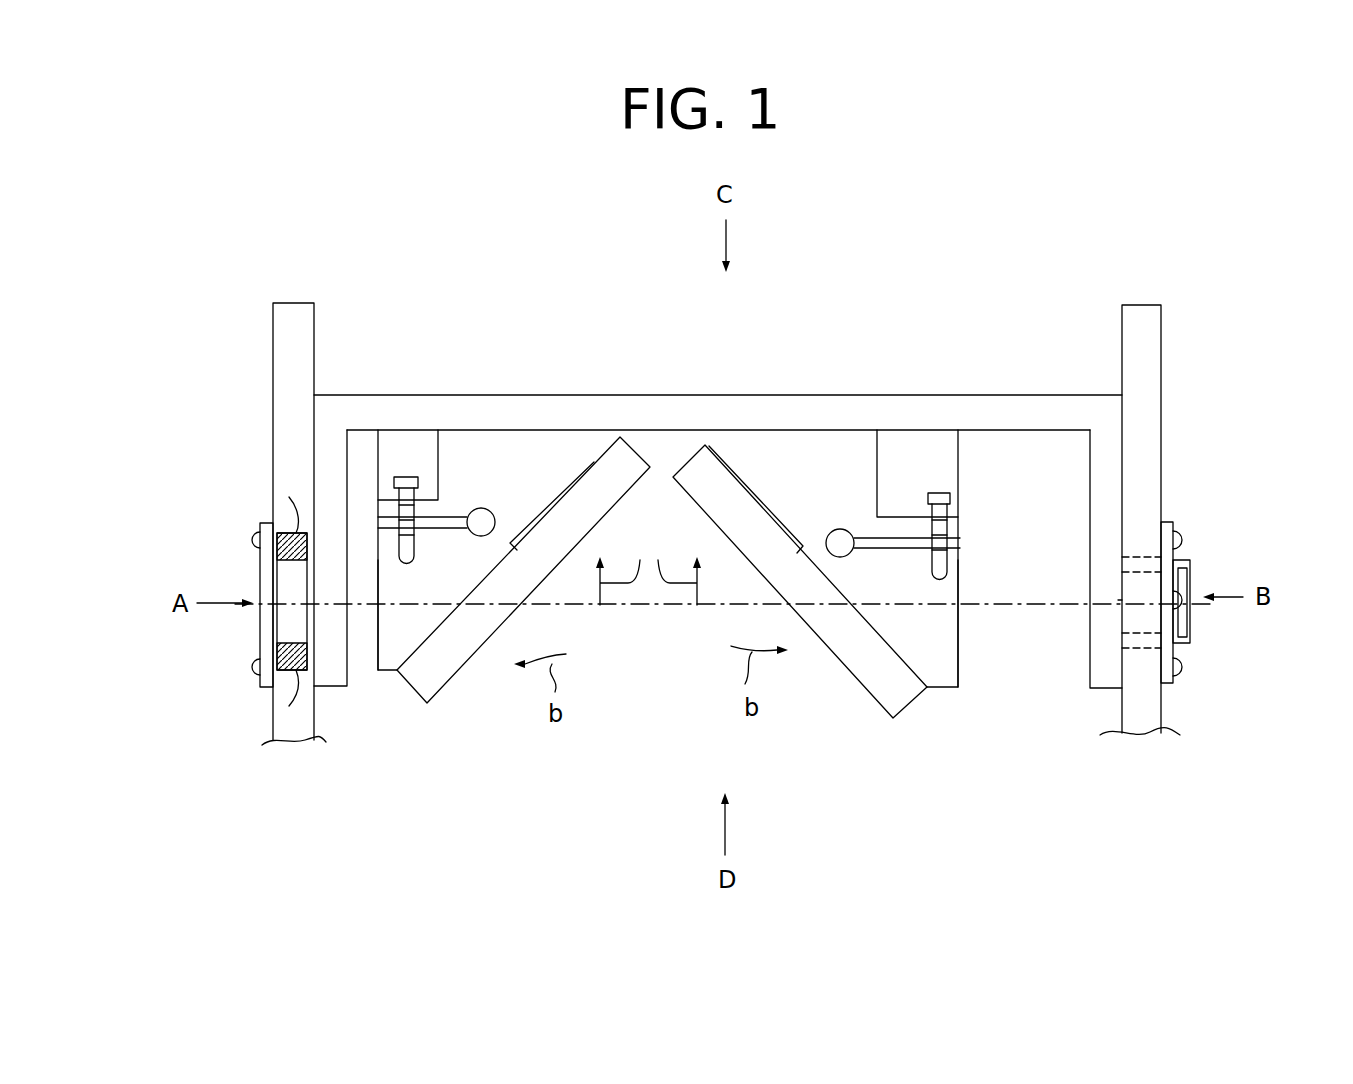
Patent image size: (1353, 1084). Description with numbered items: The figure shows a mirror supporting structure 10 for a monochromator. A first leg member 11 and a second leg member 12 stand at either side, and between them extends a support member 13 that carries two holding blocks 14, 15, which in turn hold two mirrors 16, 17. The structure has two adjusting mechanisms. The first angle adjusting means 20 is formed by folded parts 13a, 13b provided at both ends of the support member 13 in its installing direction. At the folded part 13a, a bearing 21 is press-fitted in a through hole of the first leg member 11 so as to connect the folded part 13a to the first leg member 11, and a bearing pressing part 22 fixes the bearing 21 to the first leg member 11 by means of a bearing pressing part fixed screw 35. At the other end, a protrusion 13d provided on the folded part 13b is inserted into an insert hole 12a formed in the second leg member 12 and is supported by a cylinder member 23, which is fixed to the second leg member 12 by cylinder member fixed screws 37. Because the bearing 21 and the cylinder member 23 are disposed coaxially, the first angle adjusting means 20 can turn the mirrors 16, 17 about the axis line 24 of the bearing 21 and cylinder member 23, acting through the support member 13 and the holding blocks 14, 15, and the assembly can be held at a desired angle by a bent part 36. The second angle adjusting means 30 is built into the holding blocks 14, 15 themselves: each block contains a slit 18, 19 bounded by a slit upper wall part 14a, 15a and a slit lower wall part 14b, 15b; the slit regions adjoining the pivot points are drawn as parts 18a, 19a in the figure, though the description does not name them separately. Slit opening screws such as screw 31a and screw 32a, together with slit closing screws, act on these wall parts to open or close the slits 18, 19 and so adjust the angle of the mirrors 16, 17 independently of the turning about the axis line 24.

The mirror supporting structure 10 is at (764, 259).
The first leg member 11 is at (287, 340).
The second leg member 12 is at (1152, 404).
The insert hole 12a is at (1127, 640).
The support member 13 is at (651, 394).
The folded part 13a is at (334, 688).
The folded part 13b is at (1090, 524).
The protrusion 13d is at (1118, 600).
The holding block 14 is at (535, 453).
The slit upper wall part 14a is at (427, 493).
The slit lower wall part 14b is at (395, 578).
The holding block 15 is at (783, 460).
The slit upper wall part 15a is at (897, 517).
The slit lower wall part 15b is at (913, 593).
The mirror 16 is at (443, 655).
The mirror 17 is at (880, 686).
The slit 18 is at (478, 512).
The left pivot arm 18a is at (507, 513).
The slit 19 is at (840, 543).
The right pivot arm 19a is at (828, 533).
The first angle adjusting means 20 is at (240, 584).
The bearing 21 is at (272, 494).
The bearing pressing part 22 is at (258, 575).
The cylinder member 23 is at (1172, 680).
The axis line 24 is at (668, 606).
The second angle adjusting means 30 is at (392, 447).
The slit opening screw 31a is at (410, 500).
The slit opening screw 32a is at (942, 493).
The bearing pressing part fixed screw 35 is at (260, 537).
The bent part 36 is at (277, 532).
The cylinder member fixed screw 37 is at (1185, 539).